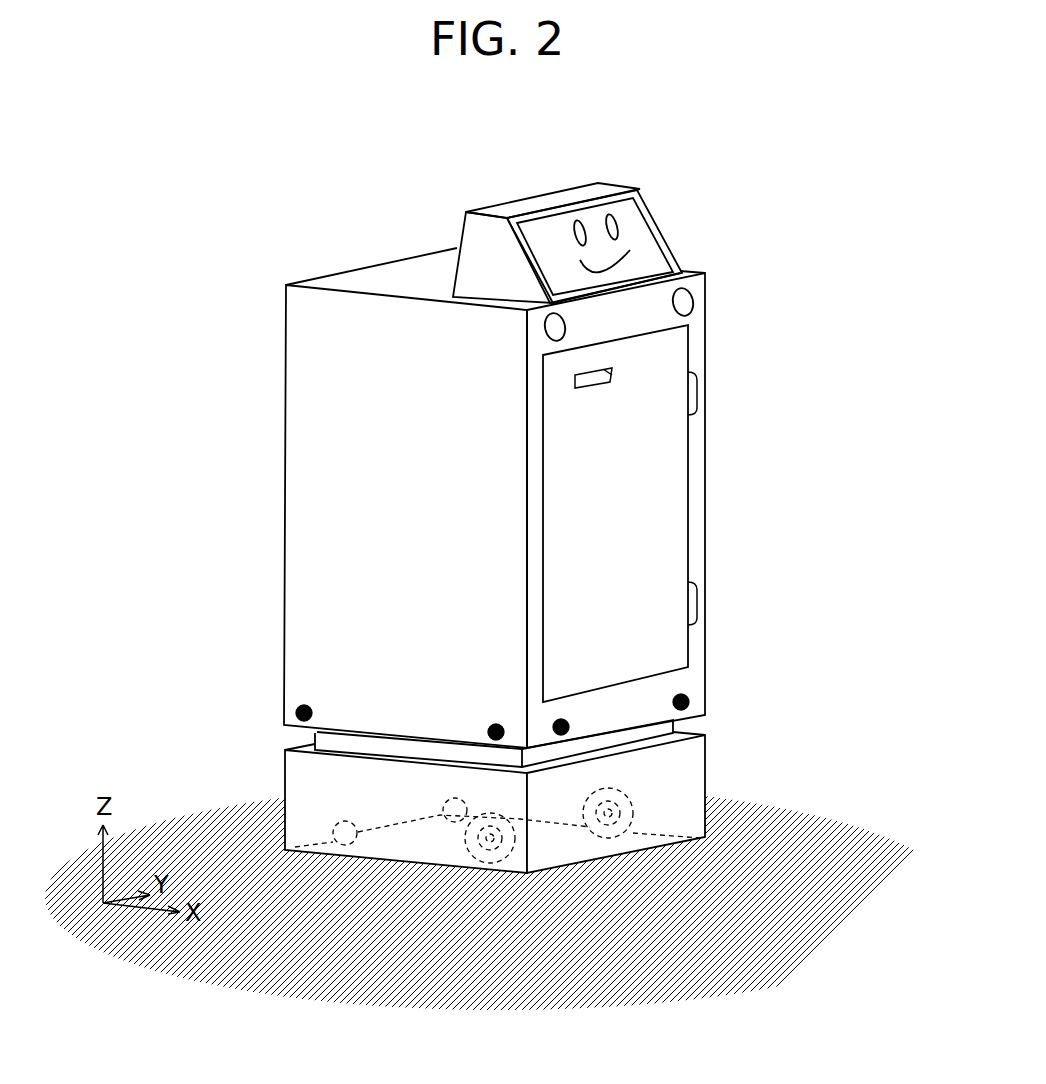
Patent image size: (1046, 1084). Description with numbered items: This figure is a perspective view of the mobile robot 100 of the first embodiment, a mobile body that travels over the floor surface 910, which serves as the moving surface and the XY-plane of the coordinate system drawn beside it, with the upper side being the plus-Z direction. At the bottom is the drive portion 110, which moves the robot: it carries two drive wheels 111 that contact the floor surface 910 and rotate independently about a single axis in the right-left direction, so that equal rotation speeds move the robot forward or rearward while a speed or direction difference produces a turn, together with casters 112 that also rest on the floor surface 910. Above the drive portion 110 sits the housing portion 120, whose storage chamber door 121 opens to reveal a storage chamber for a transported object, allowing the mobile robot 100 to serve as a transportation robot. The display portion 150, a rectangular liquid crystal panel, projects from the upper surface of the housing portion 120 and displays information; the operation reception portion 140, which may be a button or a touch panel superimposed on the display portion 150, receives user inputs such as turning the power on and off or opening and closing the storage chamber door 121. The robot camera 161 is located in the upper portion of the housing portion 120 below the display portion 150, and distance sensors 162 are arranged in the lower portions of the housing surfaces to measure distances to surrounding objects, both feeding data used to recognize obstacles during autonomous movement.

The mobile robot 100 is at (270, 238).
The drive portion 110 is at (787, 695).
The drive wheels 111 is at (637, 797).
The casters 112 is at (333, 825).
The housing portion 120 is at (785, 476).
The storage chamber door 121 is at (655, 468).
The operation reception portion 140 is at (635, 212).
The display portion 150 is at (655, 257).
The robot camera 161 is at (683, 302).
The distance sensor 162 is at (295, 710).
The floor surface 910 is at (790, 833).